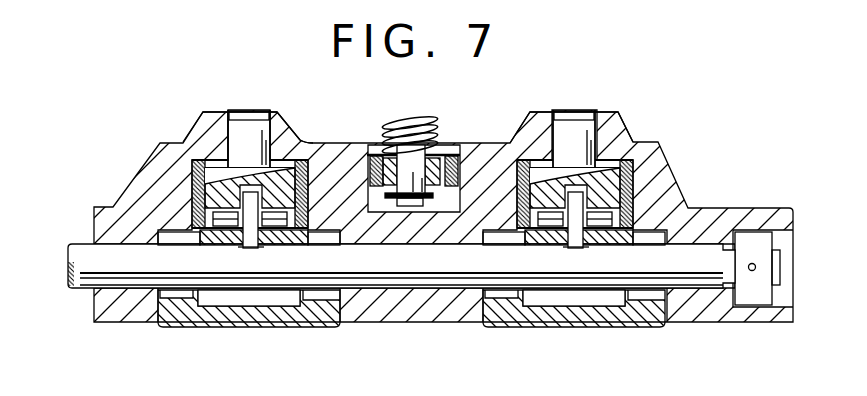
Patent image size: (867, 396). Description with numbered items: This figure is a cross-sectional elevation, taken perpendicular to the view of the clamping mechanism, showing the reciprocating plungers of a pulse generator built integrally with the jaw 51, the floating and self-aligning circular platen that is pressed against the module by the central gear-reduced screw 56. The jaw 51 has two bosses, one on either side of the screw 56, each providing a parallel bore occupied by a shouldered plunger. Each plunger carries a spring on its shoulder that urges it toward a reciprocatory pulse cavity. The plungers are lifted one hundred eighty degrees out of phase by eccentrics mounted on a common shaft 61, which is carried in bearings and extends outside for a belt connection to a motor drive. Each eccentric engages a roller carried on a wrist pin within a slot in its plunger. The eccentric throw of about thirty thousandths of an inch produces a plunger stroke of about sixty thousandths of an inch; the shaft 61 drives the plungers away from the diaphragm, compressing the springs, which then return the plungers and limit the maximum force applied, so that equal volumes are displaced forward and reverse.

The jaw 51 is at (746, 214).
The central gear-reduced screw 56 is at (432, 126).
The shaft 61 is at (84, 250).